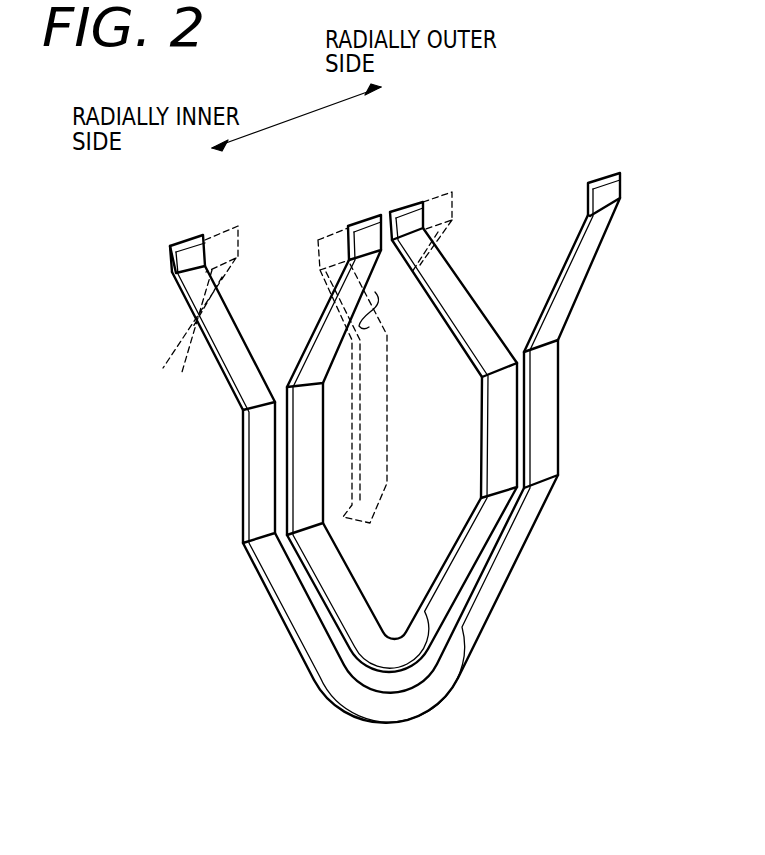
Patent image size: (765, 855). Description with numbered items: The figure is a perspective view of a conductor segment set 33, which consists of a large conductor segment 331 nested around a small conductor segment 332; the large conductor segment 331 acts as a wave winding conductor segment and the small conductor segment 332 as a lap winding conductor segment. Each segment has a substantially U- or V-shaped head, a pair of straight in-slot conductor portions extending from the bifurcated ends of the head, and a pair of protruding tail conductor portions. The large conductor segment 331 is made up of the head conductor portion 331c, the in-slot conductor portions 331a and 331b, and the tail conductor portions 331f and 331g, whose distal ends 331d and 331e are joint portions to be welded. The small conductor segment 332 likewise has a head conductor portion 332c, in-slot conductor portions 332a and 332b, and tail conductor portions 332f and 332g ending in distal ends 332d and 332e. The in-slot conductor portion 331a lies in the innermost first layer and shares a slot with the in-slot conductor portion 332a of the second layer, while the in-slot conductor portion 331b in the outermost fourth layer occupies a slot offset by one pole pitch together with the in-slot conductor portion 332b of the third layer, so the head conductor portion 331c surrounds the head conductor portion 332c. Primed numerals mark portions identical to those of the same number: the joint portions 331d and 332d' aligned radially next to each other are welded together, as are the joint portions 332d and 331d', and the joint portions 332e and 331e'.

The conductor segment set 33 is at (502, 635).
The large conductor segment 331 is at (582, 303).
The small conductor segment 332 is at (490, 320).
The in-slot conductor portion 331a is at (260, 445).
The in-slot conductor portion 331b is at (547, 400).
The head conductor portion 331c is at (383, 703).
The distal end 331d is at (131, 259).
The joint portion 331d' is at (345, 345).
The distal end 331e is at (657, 194).
The joint portion 331e' is at (468, 197).
The tail conductor portion 331f is at (238, 373).
The tail conductor portion 331g is at (590, 250).
The in-slot conductor portion 332a is at (300, 493).
The in-slot conductor portion 332b is at (503, 458).
The head conductor portion 332c is at (393, 653).
The distal end 332d is at (370, 191).
The joint portion 332d' is at (220, 270).
The distal end 332e is at (410, 214).
The tail conductor portion 332f is at (317, 352).
The tail conductor portion 332g is at (453, 293).